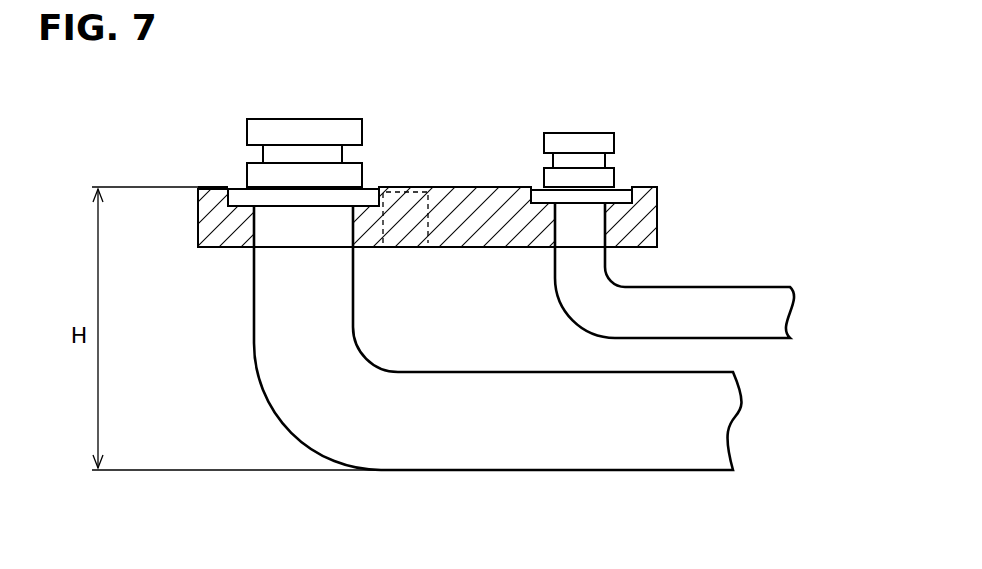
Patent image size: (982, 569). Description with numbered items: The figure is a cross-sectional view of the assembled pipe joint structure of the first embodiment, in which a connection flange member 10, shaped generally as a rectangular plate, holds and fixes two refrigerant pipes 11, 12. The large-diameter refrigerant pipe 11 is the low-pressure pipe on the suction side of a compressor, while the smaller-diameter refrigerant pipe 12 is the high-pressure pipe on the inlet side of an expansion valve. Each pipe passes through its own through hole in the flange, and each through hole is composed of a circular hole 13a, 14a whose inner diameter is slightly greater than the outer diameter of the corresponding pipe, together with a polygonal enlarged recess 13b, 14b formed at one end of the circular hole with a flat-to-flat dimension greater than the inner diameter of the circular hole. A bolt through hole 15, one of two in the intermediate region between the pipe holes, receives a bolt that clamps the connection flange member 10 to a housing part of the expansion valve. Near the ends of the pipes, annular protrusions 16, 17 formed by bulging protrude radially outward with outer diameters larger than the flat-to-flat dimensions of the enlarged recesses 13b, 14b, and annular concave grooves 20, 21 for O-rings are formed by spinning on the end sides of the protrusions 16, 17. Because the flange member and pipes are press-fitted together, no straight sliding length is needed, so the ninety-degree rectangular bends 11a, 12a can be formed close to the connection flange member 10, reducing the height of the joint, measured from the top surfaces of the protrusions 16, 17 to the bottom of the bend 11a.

The connection flange member 10 is at (660, 191).
The refrigerant pipe 11 is at (469, 373).
The rectangular bend 11a is at (320, 404).
The refrigerant pipe 12 is at (650, 272).
The rectangular bend 12a is at (592, 307).
The circular hole 13a is at (216, 237).
The enlarged recess 13b is at (210, 204).
The circular hole 14a is at (538, 244).
The enlarged recess 14b is at (526, 191).
The bolt through hole 15 is at (426, 192).
The protrusion 16 is at (238, 195).
The protrusion 17 is at (622, 195).
The annular concave groove 20 is at (305, 152).
The annular concave groove 21 is at (579, 160).